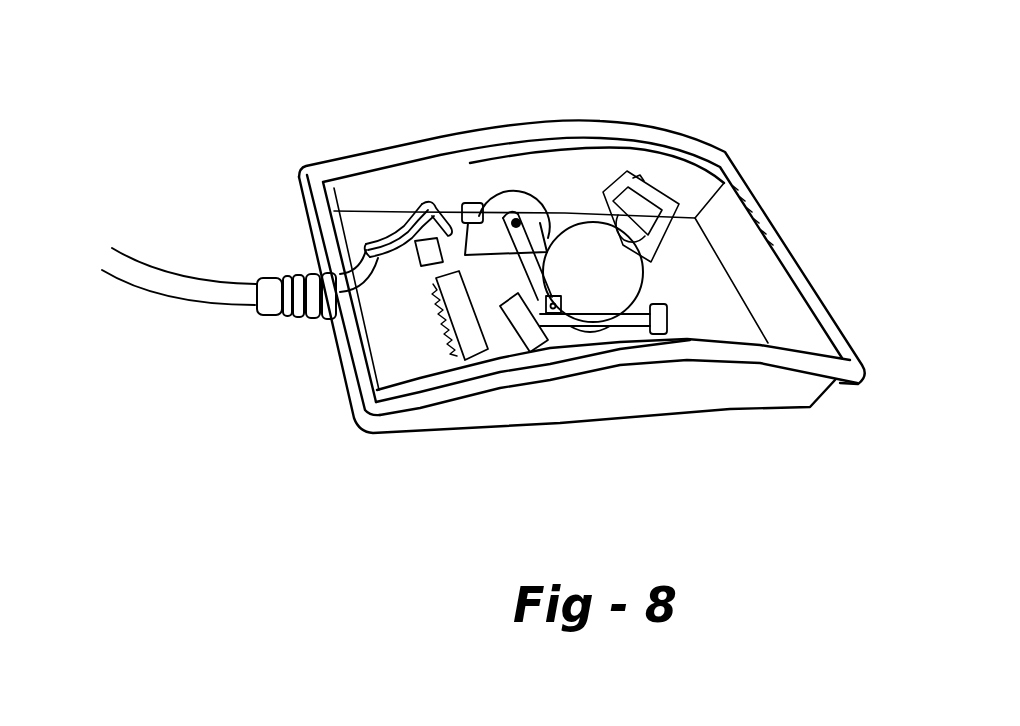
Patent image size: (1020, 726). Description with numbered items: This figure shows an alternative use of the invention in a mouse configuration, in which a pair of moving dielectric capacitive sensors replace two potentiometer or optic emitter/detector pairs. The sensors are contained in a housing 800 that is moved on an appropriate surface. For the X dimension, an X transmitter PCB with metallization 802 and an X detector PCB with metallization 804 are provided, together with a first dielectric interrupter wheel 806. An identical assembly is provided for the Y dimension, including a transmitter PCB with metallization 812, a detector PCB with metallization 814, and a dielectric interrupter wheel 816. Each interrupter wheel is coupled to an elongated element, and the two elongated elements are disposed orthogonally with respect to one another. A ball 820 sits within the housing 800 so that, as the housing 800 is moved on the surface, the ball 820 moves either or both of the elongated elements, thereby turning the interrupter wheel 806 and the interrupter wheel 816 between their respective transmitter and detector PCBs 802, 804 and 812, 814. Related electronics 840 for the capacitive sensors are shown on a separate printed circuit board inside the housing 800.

The housing 800 is at (452, 415).
The X transmitter PCB with metallization 802 is at (551, 344).
The X detector PCB with metallization 804 is at (516, 333).
The first dielectric interrupter wheel 806 is at (549, 340).
The transmitter PCB with metallization 812 is at (569, 192).
The detector PCB with metallization 814 is at (449, 171).
The dielectric interrupter wheel 816 is at (506, 160).
The ball 820 is at (630, 282).
The related electronics 840 is at (430, 330).